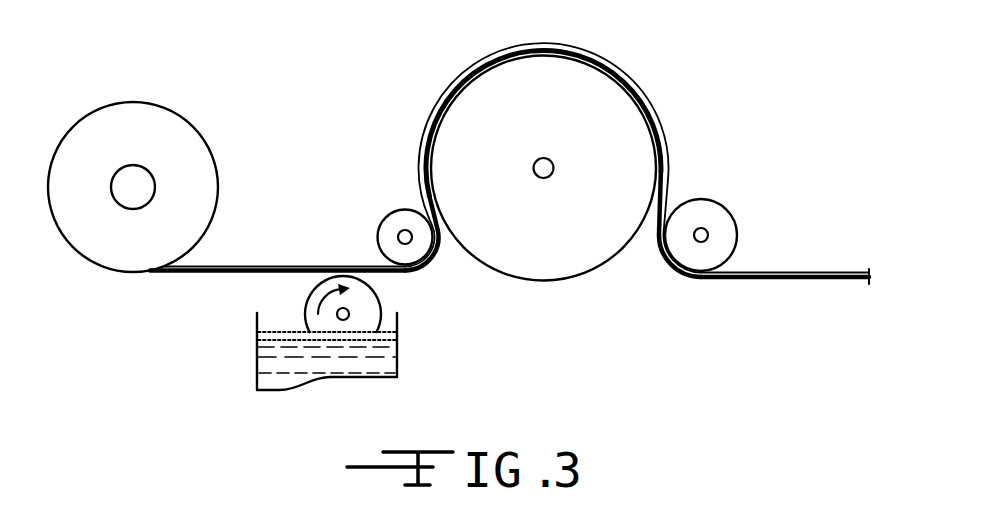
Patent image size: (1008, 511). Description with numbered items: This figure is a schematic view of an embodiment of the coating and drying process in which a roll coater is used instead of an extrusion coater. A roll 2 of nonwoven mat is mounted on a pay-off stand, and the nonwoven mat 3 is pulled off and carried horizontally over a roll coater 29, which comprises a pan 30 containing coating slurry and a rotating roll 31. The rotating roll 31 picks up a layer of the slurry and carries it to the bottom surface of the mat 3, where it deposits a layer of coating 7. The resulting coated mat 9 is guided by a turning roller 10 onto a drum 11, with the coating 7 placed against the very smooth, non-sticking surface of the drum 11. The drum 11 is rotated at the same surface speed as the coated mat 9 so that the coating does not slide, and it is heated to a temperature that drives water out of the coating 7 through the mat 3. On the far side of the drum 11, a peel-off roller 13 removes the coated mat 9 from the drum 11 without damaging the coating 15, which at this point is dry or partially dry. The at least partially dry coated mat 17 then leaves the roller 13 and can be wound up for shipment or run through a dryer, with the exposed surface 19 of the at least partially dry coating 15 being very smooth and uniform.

The roll of nonwoven mat 2 is at (195, 128).
The nonwoven mat 3 is at (247, 268).
The coating 7 is at (399, 277).
The coated mat 9 is at (380, 260).
The turning roller 10 is at (400, 222).
The drum 11 is at (462, 127).
The peel-off roller 13 is at (718, 218).
The at least partially dry coating 15 is at (652, 227).
The at least partially dry coated mat 17 is at (753, 282).
The exposed surface 19 is at (817, 283).
The roll coater 29 is at (257, 363).
The pan 30 is at (257, 340).
The rotating roll 31 is at (282, 333).